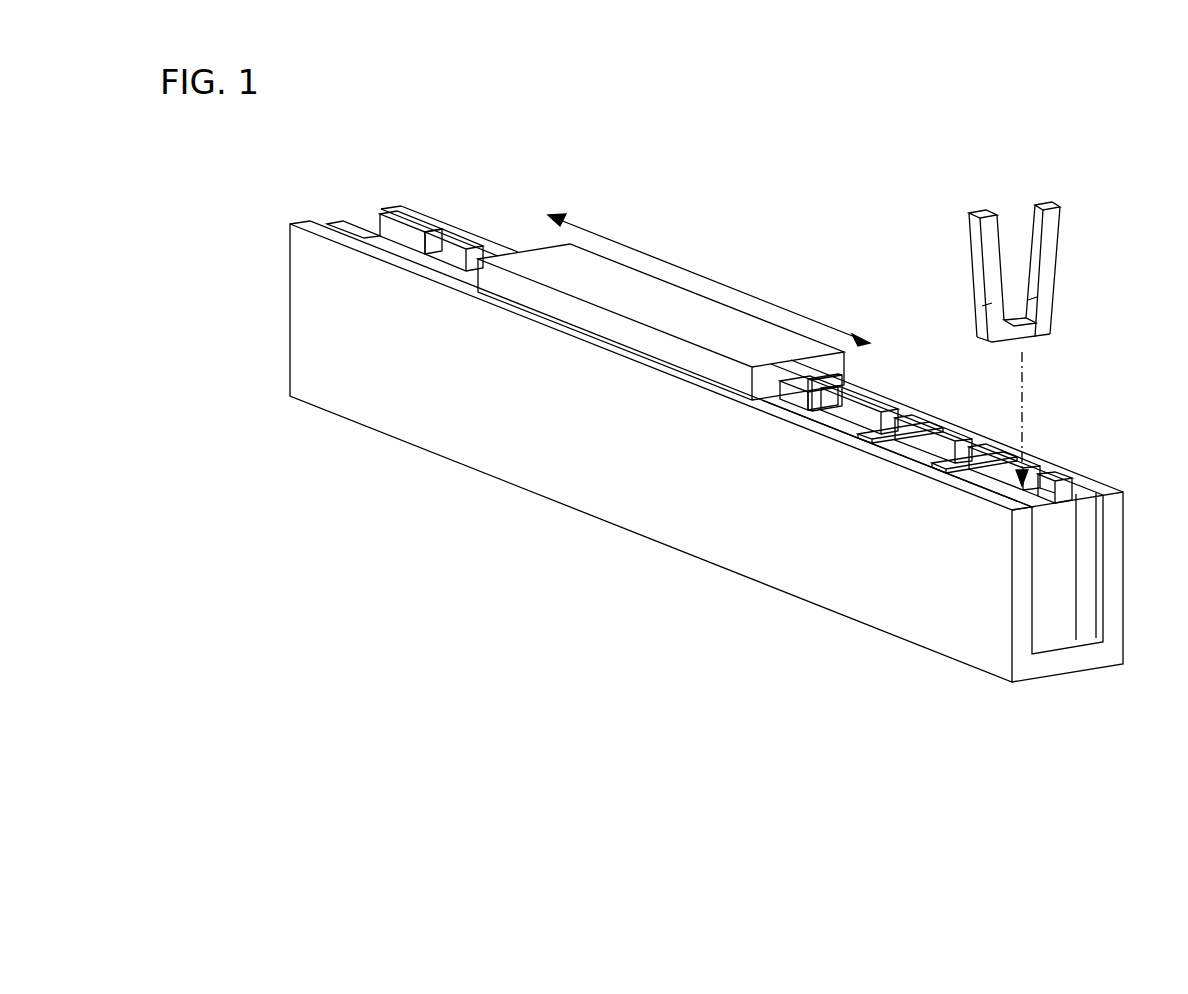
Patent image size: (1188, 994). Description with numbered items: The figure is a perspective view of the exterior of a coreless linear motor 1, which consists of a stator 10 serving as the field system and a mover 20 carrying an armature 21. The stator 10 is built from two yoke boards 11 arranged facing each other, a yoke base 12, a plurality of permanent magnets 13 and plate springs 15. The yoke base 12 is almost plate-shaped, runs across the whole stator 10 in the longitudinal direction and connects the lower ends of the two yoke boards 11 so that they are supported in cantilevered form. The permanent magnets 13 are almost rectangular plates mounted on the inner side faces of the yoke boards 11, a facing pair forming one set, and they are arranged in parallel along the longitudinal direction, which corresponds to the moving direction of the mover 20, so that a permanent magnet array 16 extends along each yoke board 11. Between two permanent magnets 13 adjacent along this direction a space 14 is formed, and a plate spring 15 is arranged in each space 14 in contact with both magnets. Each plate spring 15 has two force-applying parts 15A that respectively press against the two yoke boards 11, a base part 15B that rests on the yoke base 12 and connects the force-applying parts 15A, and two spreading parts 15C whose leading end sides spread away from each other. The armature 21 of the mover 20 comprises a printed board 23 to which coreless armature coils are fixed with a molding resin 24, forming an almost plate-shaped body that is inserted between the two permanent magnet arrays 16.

The linear motor 1 is at (788, 226).
The stator 10 is at (707, 435).
The yoke board 11 is at (705, 553).
The yoke base 12 is at (1083, 662).
The permanent magnet 13 is at (412, 255).
The space 14 is at (1032, 472).
The plate spring 15 is at (1076, 204).
The force-applying part 15A is at (984, 320).
The base part 15B is at (1036, 332).
The spreading part 15C is at (978, 254).
The permanent magnet array 16 is at (373, 208).
The mover 20 is at (677, 278).
The armature 21 is at (626, 285).
The printed board 23 is at (813, 378).
The molding resin 24 is at (798, 383).